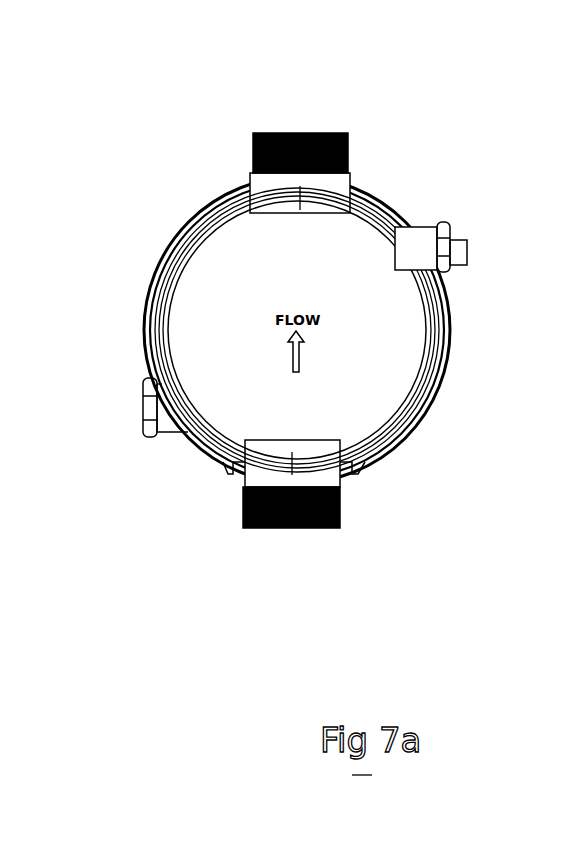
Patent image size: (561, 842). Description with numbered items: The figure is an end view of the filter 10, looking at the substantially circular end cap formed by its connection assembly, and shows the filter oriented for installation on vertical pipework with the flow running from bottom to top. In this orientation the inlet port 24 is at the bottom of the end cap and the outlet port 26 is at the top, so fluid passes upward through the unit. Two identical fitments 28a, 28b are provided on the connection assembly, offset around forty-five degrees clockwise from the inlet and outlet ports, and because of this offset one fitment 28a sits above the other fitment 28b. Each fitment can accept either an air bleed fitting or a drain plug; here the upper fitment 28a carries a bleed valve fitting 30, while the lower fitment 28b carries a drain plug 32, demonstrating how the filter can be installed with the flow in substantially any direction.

The clamp assembly 10 is at (248, 317).
The inlet port 24 is at (310, 528).
The outlet port 26 is at (305, 136).
The fitment 28a is at (419, 242).
The fitment 28b is at (170, 422).
The air bleed fitting 30 is at (466, 240).
The drain plug 32 is at (143, 413).